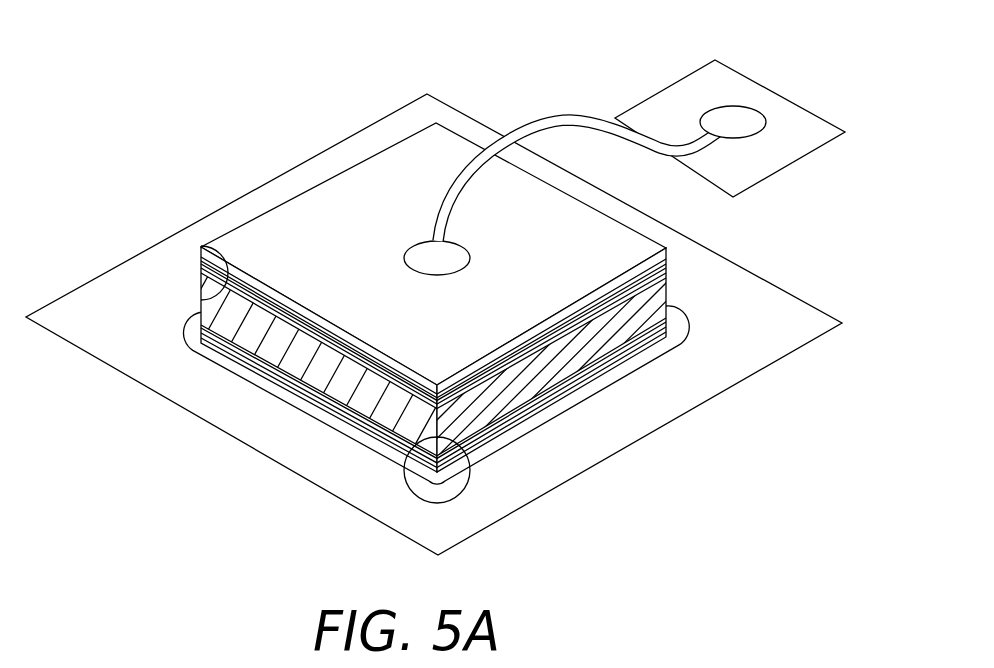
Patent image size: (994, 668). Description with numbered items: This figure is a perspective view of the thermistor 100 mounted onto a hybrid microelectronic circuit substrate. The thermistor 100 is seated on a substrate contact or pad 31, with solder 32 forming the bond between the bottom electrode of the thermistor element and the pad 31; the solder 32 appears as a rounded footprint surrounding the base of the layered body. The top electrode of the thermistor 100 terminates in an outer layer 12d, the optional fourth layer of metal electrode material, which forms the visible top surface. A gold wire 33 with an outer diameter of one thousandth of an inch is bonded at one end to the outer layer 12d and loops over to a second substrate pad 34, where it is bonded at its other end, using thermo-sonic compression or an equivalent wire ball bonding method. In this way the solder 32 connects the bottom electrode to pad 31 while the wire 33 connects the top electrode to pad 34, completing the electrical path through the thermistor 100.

The fourth layer of metal electrode material 12d is at (375, 192).
The substrate contact or pad 31 is at (735, 310).
The solder 32 is at (548, 418).
The gold wire 33 is at (588, 113).
The substrate pad 34 is at (688, 98).
The thermistor 100 is at (435, 284).